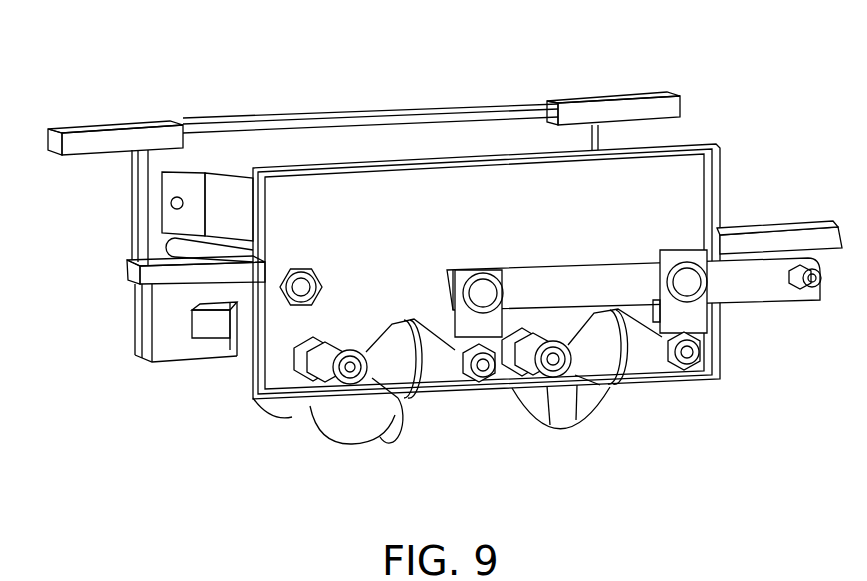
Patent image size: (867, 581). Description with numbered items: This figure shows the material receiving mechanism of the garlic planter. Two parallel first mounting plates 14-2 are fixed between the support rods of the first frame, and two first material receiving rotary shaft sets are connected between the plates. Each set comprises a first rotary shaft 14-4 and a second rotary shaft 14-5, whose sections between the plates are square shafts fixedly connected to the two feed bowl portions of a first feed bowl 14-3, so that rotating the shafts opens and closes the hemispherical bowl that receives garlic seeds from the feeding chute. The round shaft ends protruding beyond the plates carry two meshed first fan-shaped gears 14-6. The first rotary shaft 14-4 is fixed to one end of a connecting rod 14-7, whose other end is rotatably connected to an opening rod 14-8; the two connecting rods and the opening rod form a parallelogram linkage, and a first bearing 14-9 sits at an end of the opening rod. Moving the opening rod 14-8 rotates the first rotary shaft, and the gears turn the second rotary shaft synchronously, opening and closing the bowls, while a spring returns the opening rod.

The first mounting plate 14-2 is at (407, 220).
The first feed bowl 14-3 is at (593, 407).
The first rotary shaft 14-4 is at (687, 377).
The second rotary shaft 14-5 is at (553, 357).
The first fan-shaped gear 14-6 is at (427, 360).
The connecting rod 14-7 is at (685, 317).
The opening rod 14-8 is at (747, 283).
The first bearing 14-9 is at (790, 247).